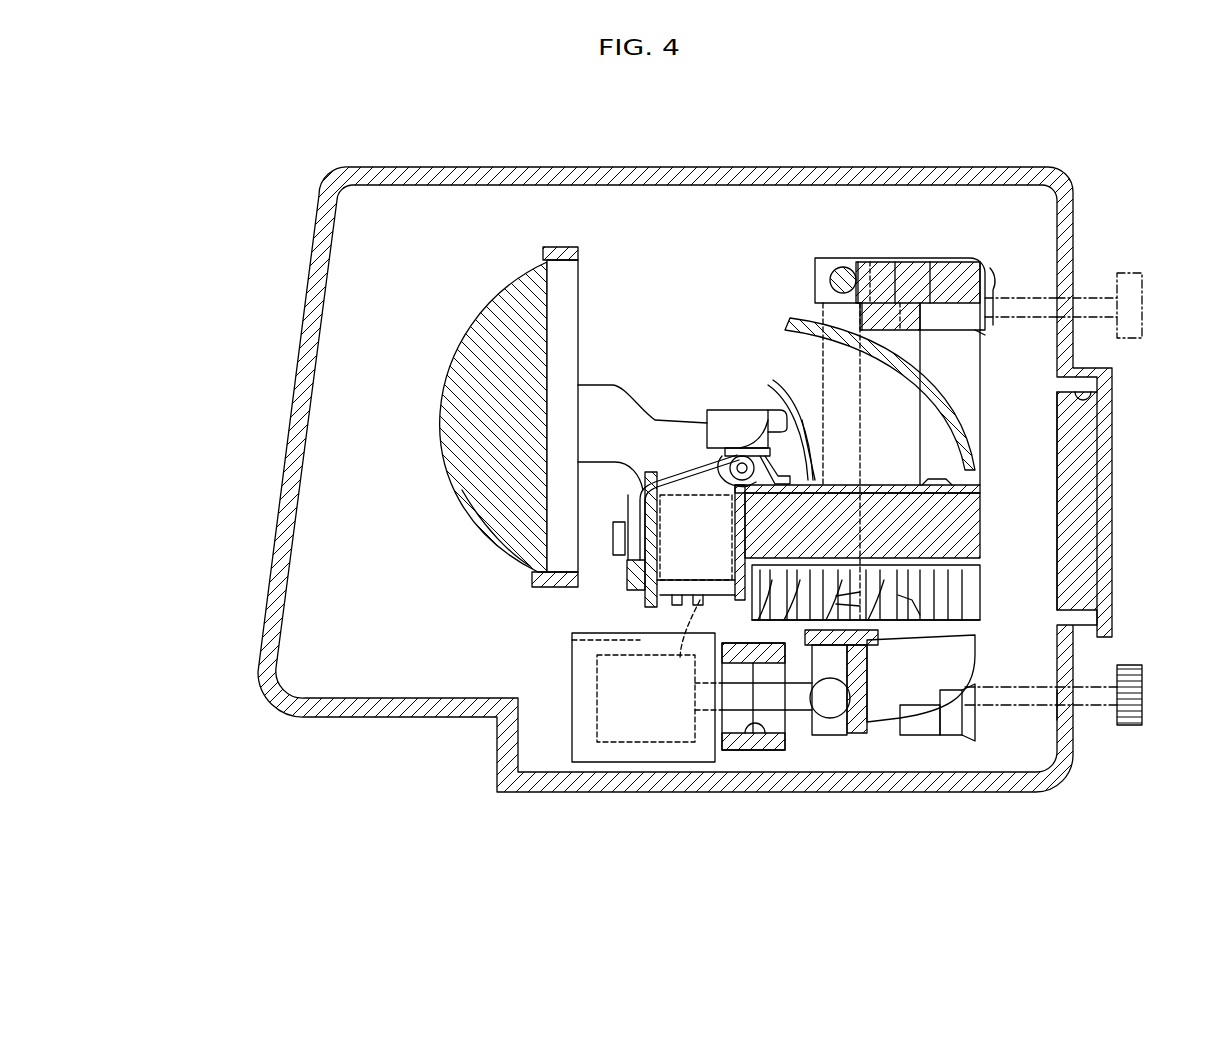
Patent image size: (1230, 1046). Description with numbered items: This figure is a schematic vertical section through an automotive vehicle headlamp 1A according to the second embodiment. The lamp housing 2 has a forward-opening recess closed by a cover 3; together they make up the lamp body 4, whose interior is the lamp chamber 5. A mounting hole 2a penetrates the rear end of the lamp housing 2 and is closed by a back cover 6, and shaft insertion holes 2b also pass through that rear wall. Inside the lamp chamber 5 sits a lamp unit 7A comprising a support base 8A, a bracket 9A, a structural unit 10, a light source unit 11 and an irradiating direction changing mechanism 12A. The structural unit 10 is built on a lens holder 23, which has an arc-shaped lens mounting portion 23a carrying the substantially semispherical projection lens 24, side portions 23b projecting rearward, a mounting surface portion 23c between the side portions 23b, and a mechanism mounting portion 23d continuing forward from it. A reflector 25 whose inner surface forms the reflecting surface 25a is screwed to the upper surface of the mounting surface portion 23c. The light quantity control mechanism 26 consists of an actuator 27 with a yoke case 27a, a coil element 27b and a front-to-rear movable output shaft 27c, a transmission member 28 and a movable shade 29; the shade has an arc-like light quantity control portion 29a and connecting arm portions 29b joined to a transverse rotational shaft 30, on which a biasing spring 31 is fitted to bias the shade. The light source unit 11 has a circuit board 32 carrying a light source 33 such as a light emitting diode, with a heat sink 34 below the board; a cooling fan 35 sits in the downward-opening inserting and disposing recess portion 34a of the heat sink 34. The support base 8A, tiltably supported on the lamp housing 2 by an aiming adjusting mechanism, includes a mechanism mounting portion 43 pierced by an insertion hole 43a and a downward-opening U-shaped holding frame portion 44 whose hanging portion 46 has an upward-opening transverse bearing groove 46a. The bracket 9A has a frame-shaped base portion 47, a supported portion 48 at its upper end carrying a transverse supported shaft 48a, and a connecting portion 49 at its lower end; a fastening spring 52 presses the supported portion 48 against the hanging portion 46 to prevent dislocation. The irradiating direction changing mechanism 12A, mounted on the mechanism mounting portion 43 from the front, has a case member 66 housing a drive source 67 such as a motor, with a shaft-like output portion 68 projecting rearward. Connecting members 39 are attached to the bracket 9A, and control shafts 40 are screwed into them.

The vehicle headlamp 1A is at (265, 191).
The lamp housing 2 is at (598, 250).
The mounting hole 2a is at (1090, 400).
The shaft insertion hole 2b is at (1066, 700).
The cover 3 is at (582, 247).
The lamp body 4 is at (534, 331).
The lamp chamber 5 is at (372, 252).
The back cover 6 is at (1108, 497).
The lamp unit 7A is at (568, 245).
The support base 8A is at (930, 262).
The bracket 9A is at (796, 410).
The structural unit 10 is at (573, 245).
The light source unit 11 is at (985, 532).
The irradiating direction changing mechanism 12A is at (572, 735).
The lens holder 23 is at (587, 247).
The lens mounting portion 23a is at (557, 243).
The side portion 23b is at (595, 388).
The mounting surface portion 23c is at (960, 346).
The mechanism mounting portion 23d is at (680, 640).
The projection lens 24 is at (440, 380).
The reflector 25 is at (985, 492).
The reflecting surface 25a is at (985, 356).
The light quantity control mechanism 26 is at (645, 588).
The actuator 27 is at (623, 557).
The yoke case 27a is at (648, 613).
The coil element 27b is at (577, 640).
The output shaft 27c is at (640, 560).
The transmission member 28 is at (628, 495).
The movable shade 29 is at (625, 398).
The light quantity control portion 29a is at (655, 415).
The connecting arm portion 29b is at (712, 410).
The rotational shaft 30 is at (728, 410).
The biasing spring 31 is at (782, 405).
The circuit board 32 is at (980, 455).
The light source 33 is at (940, 478).
The heat sink 34 is at (985, 600).
The inserting and disposing recess portion 34a is at (985, 555).
The cooling fan 35 is at (985, 585).
The connecting member 39 is at (1010, 265).
The control shaft 40 is at (1125, 270).
The mechanism mounting portion 43 is at (740, 752).
The insertion hole 43a is at (762, 745).
The holding frame portion 44 is at (962, 262).
The hanging portion 46 is at (895, 262).
The bearing groove 46a is at (843, 267).
The base portion 47 is at (790, 320).
The supported portion 48 is at (872, 262).
The supported shaft 48a is at (858, 262).
The connecting portion 49 is at (842, 735).
The fastening spring 52 is at (975, 262).
The case member 66 is at (583, 757).
The drive source 67 is at (617, 745).
The output portion 68 is at (830, 720).